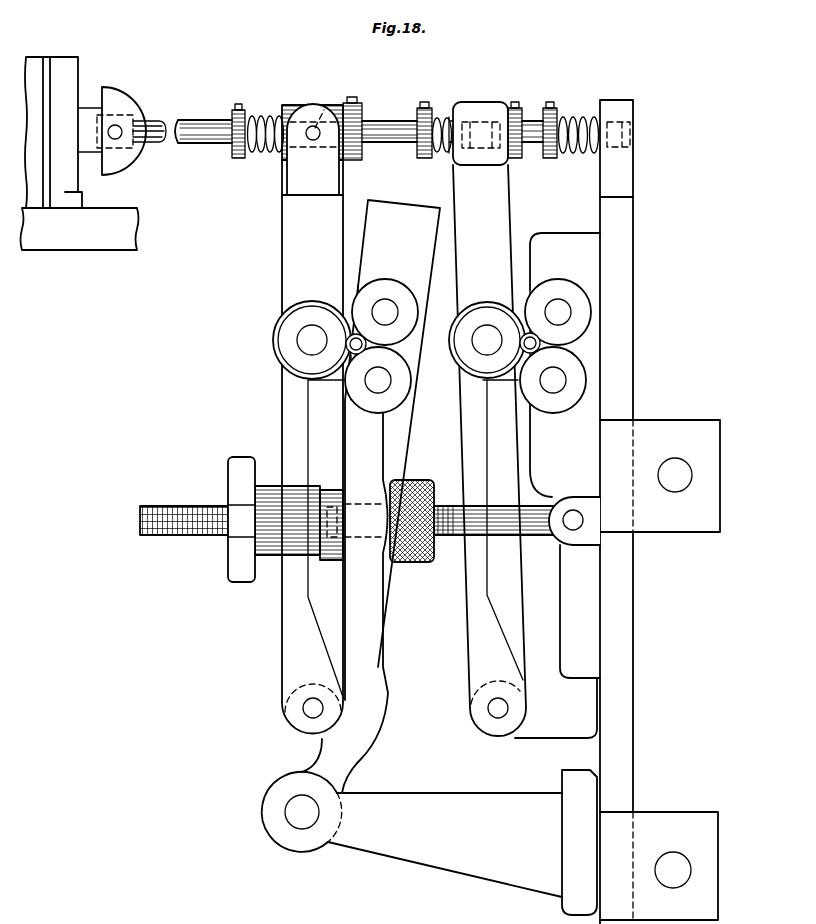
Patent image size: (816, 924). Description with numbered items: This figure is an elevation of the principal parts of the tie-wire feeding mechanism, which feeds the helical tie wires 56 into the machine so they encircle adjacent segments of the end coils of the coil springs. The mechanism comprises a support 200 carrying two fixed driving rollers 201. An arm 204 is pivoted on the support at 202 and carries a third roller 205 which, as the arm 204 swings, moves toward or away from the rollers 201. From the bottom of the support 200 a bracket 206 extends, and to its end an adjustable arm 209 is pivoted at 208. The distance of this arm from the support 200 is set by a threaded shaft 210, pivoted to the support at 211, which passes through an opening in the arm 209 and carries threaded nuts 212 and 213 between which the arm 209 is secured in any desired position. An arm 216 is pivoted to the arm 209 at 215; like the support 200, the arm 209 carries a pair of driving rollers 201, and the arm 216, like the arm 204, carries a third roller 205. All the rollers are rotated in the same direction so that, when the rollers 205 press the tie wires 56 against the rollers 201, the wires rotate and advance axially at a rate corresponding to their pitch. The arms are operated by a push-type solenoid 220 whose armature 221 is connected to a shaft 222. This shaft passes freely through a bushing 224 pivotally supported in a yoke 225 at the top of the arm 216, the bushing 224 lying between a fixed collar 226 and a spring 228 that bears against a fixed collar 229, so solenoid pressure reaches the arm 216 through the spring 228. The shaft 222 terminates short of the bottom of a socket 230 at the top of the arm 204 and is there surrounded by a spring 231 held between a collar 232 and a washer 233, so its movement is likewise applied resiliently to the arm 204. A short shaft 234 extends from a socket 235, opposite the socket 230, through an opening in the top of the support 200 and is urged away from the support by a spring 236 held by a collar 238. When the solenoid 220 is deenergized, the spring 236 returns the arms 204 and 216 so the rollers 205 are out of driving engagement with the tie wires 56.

The helical tie wire 56 is at (366, 345).
The support 200 is at (627, 393).
The driving roller 201 is at (388, 279).
The pivot 202 is at (507, 707).
The arm 204 is at (466, 634).
The third roller 205 is at (287, 348).
The bracket 206 is at (454, 866).
The pivot 208 is at (297, 820).
The adjustable arm 209 is at (380, 735).
The threaded shaft 210 is at (185, 536).
The pivot 211 is at (574, 510).
The threaded nut 212 is at (249, 584).
The threaded nut 213 is at (412, 563).
The pivot 215 is at (305, 714).
The arm 216 is at (291, 238).
The solenoid 220 is at (70, 57).
The armature 221 is at (118, 110).
The shaft 222 is at (184, 146).
The bushing 224 is at (310, 99).
The yoke 225 is at (290, 177).
The fixed collar 226 is at (358, 104).
The spring 228 is at (258, 116).
The fixed collar 229 is at (233, 120).
The socket 230 is at (464, 165).
The spring 231 is at (434, 158).
The collar 232 is at (422, 109).
The washer 233 is at (451, 116).
The short shaft 234 is at (530, 122).
The socket 235 is at (493, 124).
The spring 236 is at (590, 112).
The collar 238 is at (556, 124).